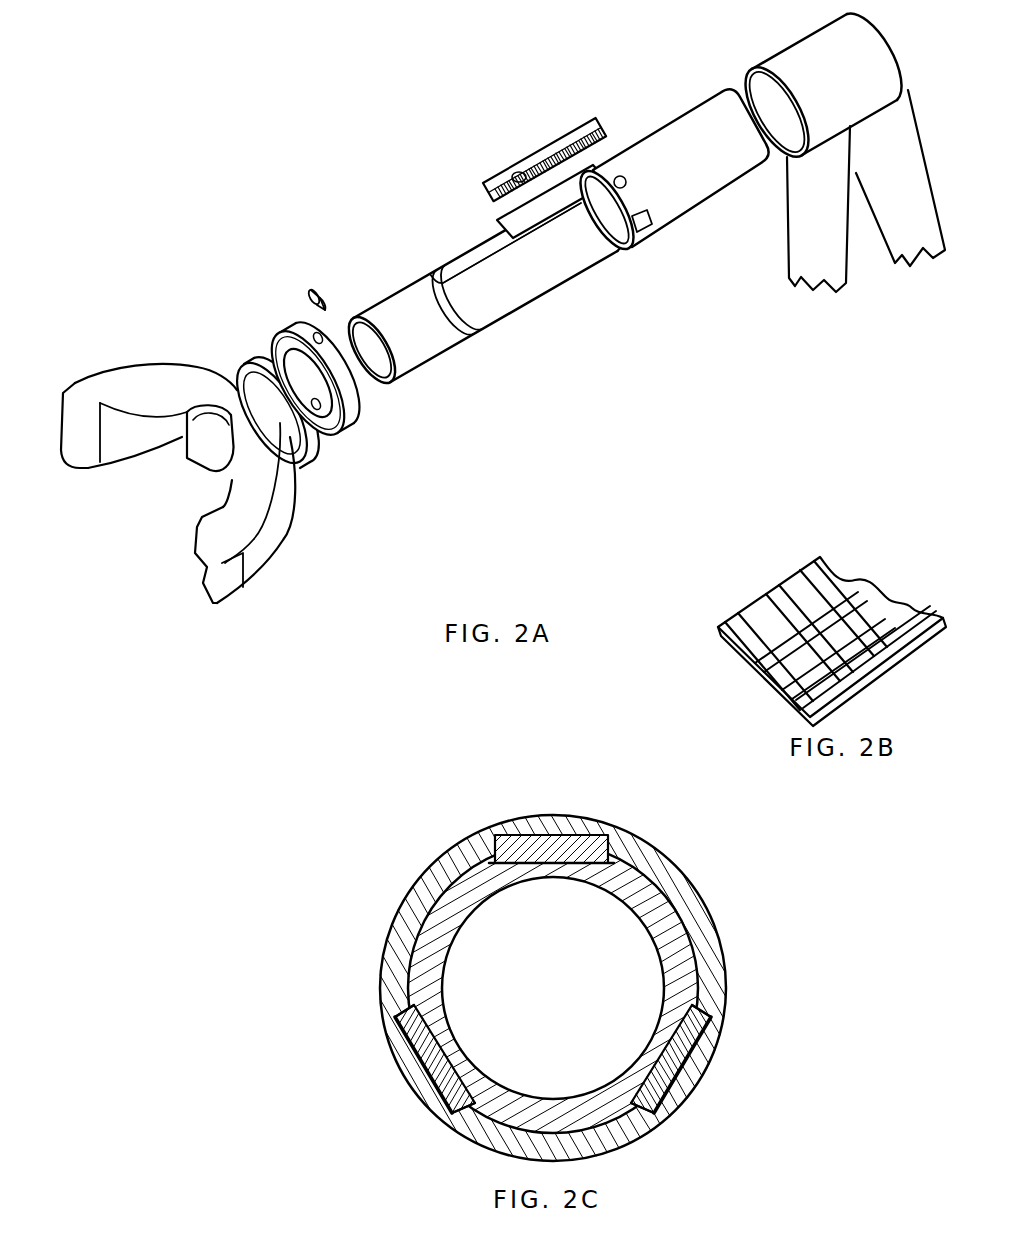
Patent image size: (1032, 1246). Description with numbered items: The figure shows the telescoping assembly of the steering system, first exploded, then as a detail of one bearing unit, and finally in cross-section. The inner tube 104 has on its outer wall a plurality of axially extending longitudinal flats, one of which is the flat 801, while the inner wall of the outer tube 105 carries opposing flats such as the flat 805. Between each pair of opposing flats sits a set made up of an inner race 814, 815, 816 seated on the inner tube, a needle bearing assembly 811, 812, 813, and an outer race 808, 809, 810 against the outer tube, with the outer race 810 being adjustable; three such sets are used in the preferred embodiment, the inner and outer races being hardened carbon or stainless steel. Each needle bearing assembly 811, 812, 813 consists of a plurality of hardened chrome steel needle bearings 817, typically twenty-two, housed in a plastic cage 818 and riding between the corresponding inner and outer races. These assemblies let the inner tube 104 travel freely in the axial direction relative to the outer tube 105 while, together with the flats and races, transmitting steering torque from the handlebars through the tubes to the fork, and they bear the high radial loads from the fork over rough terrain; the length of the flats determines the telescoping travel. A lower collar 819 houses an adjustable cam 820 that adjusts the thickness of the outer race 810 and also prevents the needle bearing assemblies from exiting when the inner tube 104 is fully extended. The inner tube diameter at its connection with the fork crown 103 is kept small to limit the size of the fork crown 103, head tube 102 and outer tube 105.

In FIG. 2A, the head tube 102 is at (795, 65).
In FIG. 2A, the fork crown 103 is at (268, 395).
In FIG. 2A, the inner tube 104 is at (417, 328).
In FIG. 2C, the inner tube 104 is at (672, 942).
In FIG. 2A, the outer tube 105 is at (718, 163).
In FIG. 2C, the outer tube 105 is at (665, 868).
In FIG. 2A, the flat 801 is at (513, 245).
In FIG. 2A, the flat 805 is at (600, 198).
In FIG. 2C, the outer race 808 is at (453, 1087).
In FIG. 2C, the outer race 809 is at (708, 1072).
In FIG. 2A, the adjustable outer race 810 is at (580, 138).
In FIG. 2C, the adjustable outer race 810 is at (518, 845).
In FIG. 2A, the needle bearing assembly 811 is at (517, 112).
In FIG. 2C, the needle bearing assembly 811 is at (504, 785).
In FIG. 2C, the needle bearing assembly 812 is at (693, 1022).
In FIG. 2C, the needle bearing assembly 813 is at (440, 1107).
In FIG. 2A, the inner race 814 is at (512, 225).
In FIG. 2C, the inner race 814 is at (578, 858).
In FIG. 2C, the inner race 815 is at (647, 1113).
In FIG. 2C, the inner race 816 is at (432, 1024).
In FIG. 2B, the needle bearings 817 is at (782, 648).
In FIG. 2B, the plastic cage 818 is at (825, 595).
In FIG. 2A, the lower collar 819 is at (352, 382).
In FIG. 2A, the adjustable cam 820 is at (312, 302).